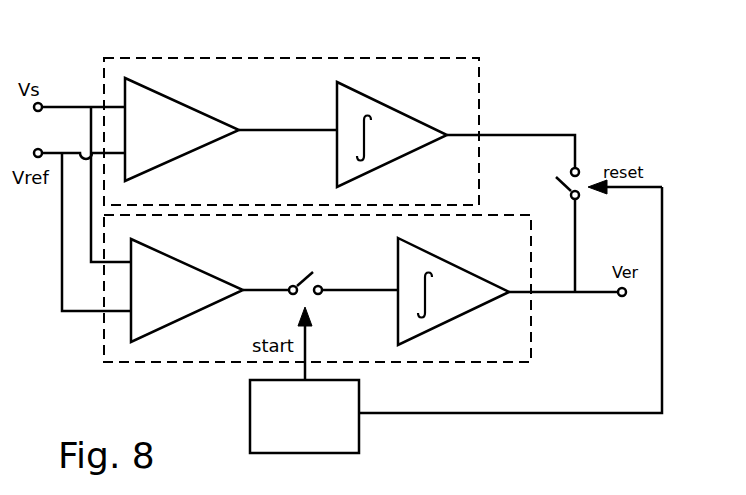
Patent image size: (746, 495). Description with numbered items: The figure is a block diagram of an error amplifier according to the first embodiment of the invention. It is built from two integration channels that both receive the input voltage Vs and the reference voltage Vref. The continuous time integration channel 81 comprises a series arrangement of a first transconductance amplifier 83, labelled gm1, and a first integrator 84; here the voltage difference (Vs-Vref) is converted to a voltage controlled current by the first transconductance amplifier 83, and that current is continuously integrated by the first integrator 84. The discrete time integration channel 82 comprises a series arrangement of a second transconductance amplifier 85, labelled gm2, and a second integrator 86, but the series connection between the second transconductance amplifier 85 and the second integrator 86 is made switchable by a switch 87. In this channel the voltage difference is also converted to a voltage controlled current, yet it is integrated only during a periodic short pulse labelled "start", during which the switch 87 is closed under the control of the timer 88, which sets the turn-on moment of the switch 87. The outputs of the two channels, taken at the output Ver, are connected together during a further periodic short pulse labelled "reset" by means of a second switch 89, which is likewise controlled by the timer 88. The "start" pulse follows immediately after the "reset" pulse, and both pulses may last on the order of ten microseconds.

The continuous time integration channel 81 is at (460, 101).
The discrete time integration channel 82 is at (512, 351).
The first transconductance amplifier 83 is at (137, 93).
The first integrator 84 is at (338, 90).
The second transconductance amplifier 85 is at (181, 271).
The second integrator 86 is at (397, 241).
The switch 87 is at (292, 278).
The timer 88 is at (318, 428).
The second switch 89 is at (585, 165).